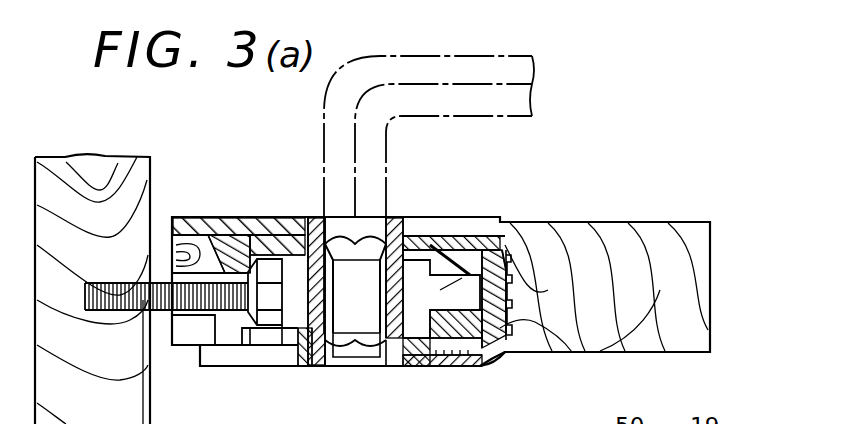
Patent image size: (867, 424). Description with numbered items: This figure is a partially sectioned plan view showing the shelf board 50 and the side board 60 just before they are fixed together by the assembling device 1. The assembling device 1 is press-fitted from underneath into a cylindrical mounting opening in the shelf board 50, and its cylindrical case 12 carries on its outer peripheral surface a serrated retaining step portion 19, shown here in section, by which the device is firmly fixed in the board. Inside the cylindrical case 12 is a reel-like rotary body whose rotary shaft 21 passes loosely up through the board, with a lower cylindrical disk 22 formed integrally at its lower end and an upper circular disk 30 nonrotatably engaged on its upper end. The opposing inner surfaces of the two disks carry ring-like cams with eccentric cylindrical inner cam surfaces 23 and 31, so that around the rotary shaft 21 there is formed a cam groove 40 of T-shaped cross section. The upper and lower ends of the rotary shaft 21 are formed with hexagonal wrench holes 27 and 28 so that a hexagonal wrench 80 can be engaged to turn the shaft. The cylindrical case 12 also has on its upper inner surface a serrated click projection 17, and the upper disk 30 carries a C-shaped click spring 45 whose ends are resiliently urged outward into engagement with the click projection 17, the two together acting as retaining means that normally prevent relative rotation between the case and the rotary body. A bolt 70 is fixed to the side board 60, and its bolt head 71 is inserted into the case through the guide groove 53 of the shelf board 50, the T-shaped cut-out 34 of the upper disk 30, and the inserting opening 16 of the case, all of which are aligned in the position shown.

The assembling device 1 is at (524, 357).
The cylindrical case 12 is at (568, 230).
The inserting opening 16 is at (223, 355).
The click projection 17 is at (502, 362).
The retaining step portion 19 is at (577, 350).
The rotary shaft 21 is at (315, 217).
The lower cylindrical disk 22 is at (440, 217).
The cylindrical inner cam surface 23 is at (480, 217).
The hexagonal wrench hole 27 is at (373, 360).
The hexagonal wrench hole 28 is at (380, 217).
The upper circular disk 30 is at (412, 360).
The cylindrical inner cam surface 31 is at (424, 367).
The T-shaped cut-out 34 is at (278, 340).
The cam groove 40 is at (515, 238).
The click spring 45 is at (446, 368).
The shelf board 50 is at (645, 233).
The guide groove 53 is at (187, 338).
The side board 60 is at (103, 160).
The bolt 70 is at (160, 282).
The bolt head 71 is at (245, 262).
The hexagonal wrench 80 is at (528, 79).